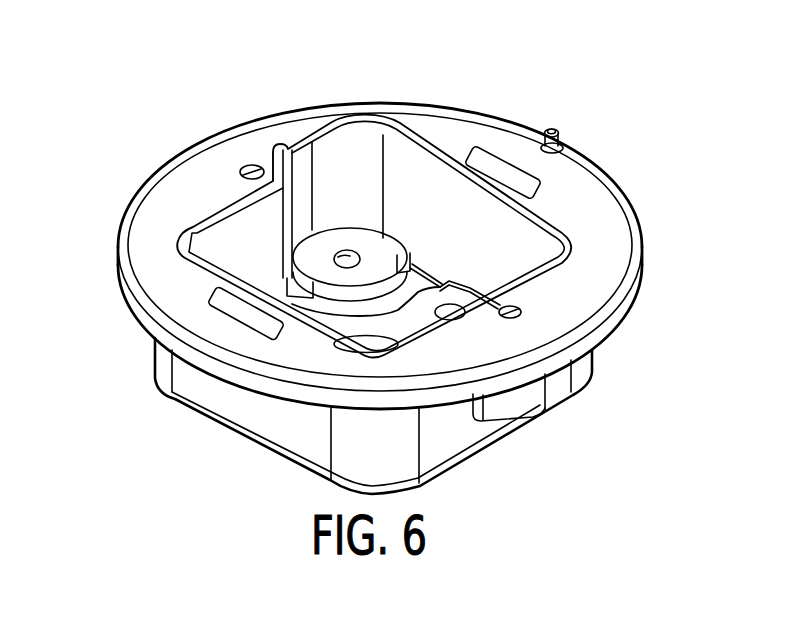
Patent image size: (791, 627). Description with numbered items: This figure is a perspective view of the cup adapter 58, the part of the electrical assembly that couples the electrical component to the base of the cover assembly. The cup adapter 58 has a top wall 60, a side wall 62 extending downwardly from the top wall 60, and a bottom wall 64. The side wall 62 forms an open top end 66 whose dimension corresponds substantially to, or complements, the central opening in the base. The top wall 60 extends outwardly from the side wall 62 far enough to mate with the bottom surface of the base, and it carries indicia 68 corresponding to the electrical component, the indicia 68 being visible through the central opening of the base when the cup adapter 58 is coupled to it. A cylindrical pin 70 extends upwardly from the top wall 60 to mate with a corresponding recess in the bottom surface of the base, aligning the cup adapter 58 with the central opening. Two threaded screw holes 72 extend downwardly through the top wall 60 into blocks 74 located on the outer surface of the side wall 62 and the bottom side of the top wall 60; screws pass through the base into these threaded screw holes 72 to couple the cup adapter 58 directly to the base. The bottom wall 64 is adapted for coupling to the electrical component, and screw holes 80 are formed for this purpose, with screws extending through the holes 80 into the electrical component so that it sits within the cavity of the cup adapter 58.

The cup adapter 58 is at (480, 68).
The top wall 60 is at (191, 185).
The side wall 62 is at (163, 360).
The bottom wall 64 is at (382, 258).
The open top end 66 is at (345, 148).
The indicia 68 is at (538, 188).
The cylindrical pin 70 is at (558, 131).
The threaded screw holes 72 is at (249, 163).
The blocks 74 is at (522, 404).
The screw holes 80 is at (347, 250).